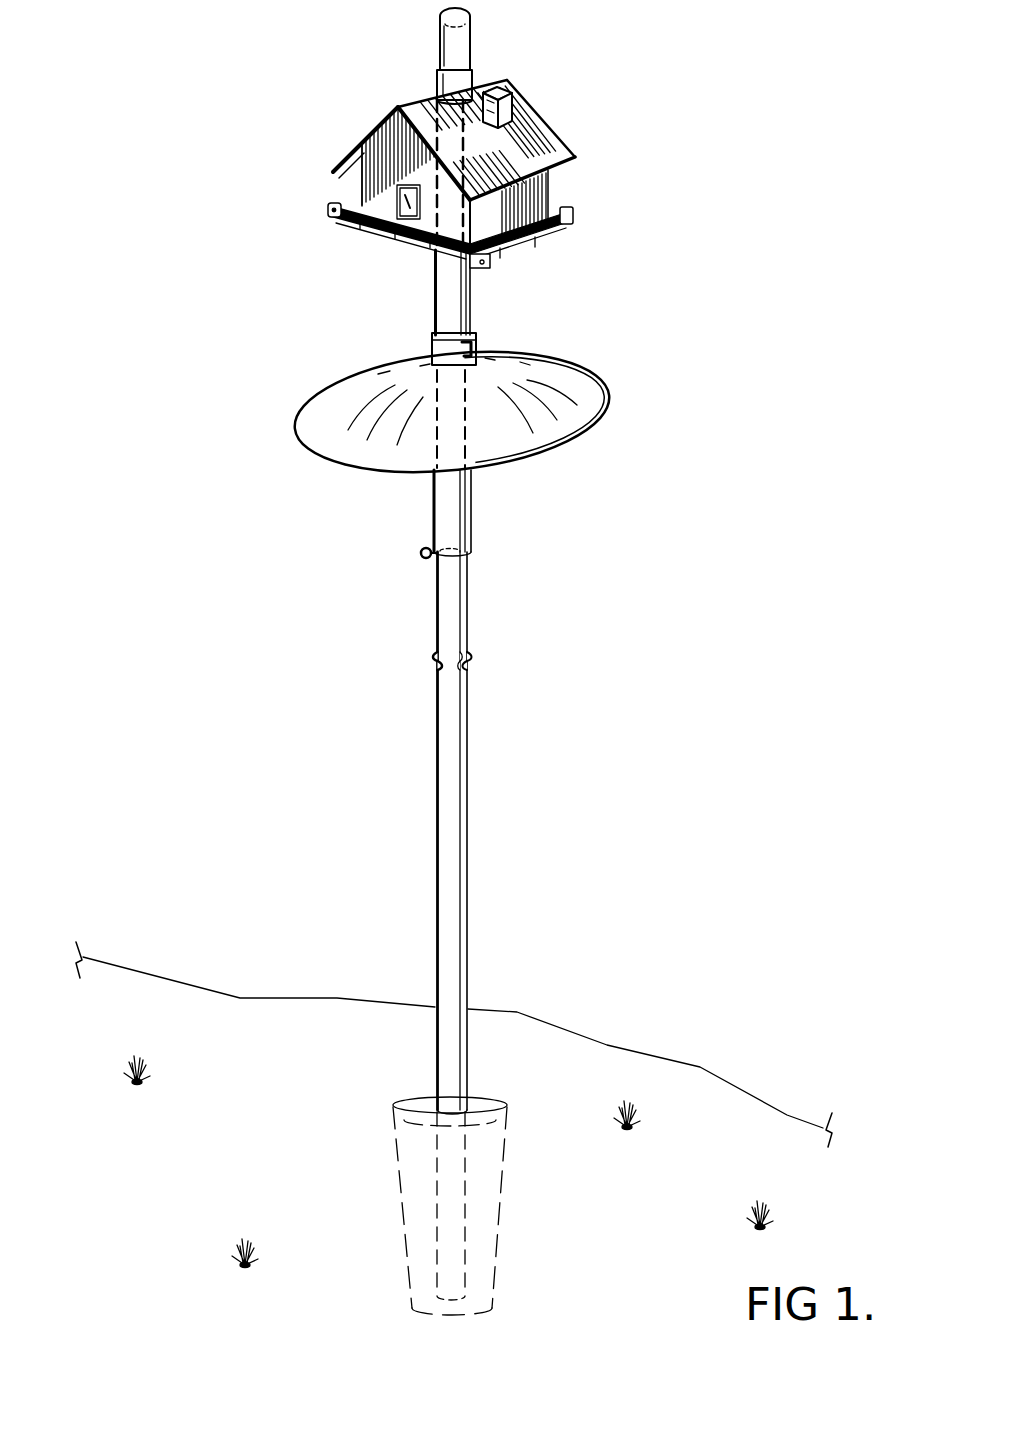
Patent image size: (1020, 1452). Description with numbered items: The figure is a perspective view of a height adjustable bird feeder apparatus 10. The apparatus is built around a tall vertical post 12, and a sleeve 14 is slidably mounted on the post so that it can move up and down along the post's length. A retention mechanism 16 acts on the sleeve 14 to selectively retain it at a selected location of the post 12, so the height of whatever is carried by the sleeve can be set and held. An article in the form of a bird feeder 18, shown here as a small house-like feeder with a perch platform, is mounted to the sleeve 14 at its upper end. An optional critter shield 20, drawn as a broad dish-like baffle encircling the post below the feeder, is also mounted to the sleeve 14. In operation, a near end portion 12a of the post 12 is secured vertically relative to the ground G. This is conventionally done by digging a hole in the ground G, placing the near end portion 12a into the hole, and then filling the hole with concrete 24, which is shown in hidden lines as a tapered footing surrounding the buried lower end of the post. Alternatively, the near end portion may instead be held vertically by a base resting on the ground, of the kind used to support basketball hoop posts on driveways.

The height adjustable bird feeder apparatus 10 is at (700, 526).
The post 12 is at (470, 784).
The near end portion 12a is at (470, 1242).
The sleeve 14 is at (475, 504).
The retention mechanism 16 is at (415, 563).
The bird feeder 18 is at (580, 186).
The critter shield 20 is at (580, 360).
The concrete 24 is at (498, 1189).
The ground G is at (308, 1062).